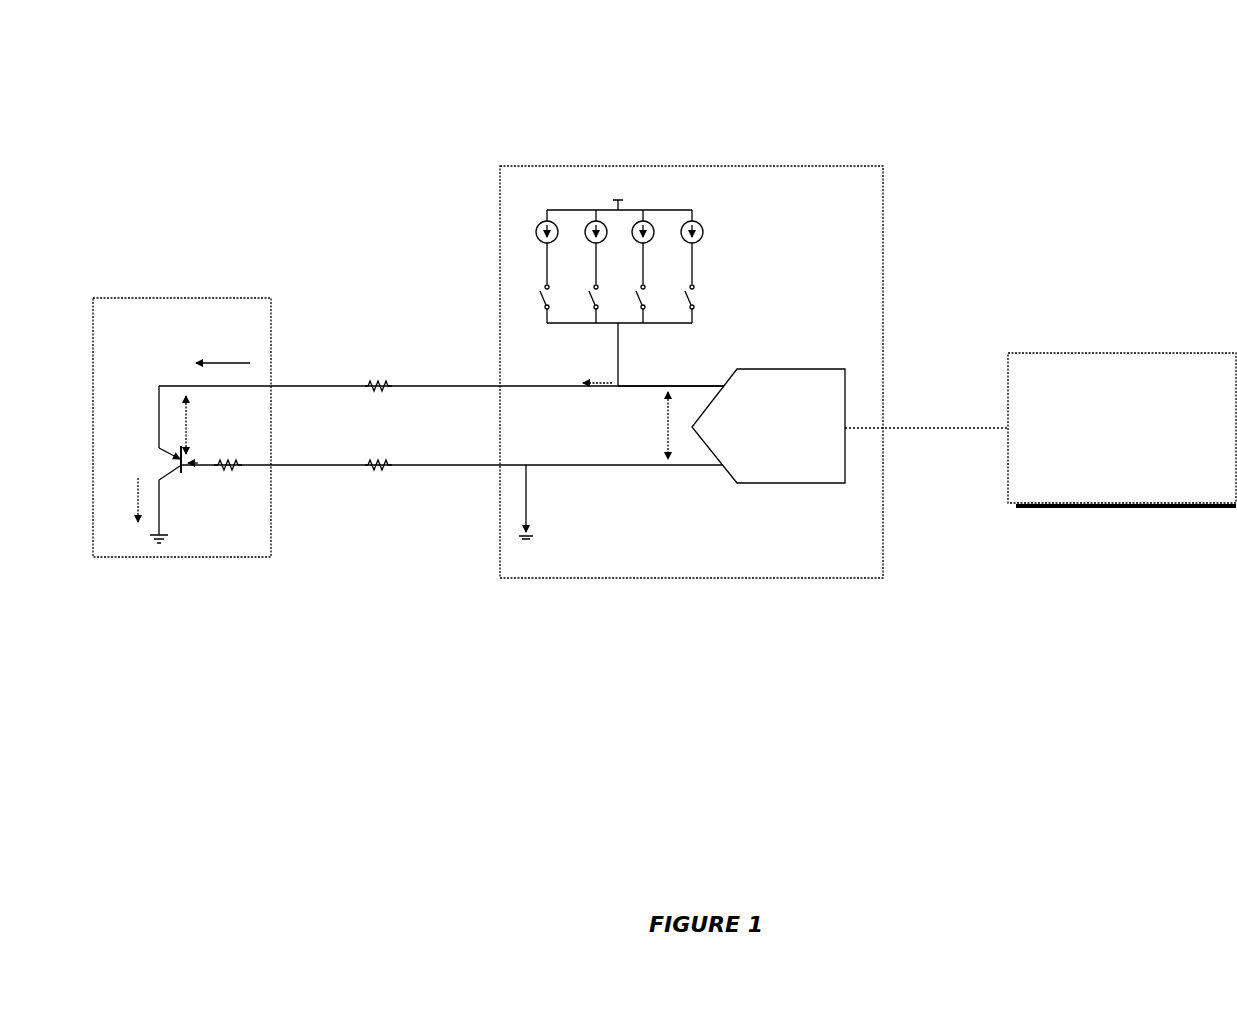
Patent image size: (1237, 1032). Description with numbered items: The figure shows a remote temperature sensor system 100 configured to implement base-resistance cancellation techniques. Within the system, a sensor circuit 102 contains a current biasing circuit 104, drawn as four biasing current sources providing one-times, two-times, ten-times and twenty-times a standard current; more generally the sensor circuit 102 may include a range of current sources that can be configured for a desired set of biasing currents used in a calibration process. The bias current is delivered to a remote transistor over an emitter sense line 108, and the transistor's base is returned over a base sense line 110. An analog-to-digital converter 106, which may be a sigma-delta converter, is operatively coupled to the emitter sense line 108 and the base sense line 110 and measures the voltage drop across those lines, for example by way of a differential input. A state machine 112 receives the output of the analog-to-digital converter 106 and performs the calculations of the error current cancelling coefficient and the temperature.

The remote temperature sensor system 100 is at (932, 47).
The sensor circuit 102 is at (691, 372).
The current biasing circuit 104 is at (742, 287).
The analog-to-digital converter (ADC) 106 is at (768, 426).
The emitter sense line (DXP) 108 is at (697, 384).
The base sense line (DXN) 110 is at (634, 462).
The state machine 112 is at (1122, 429).